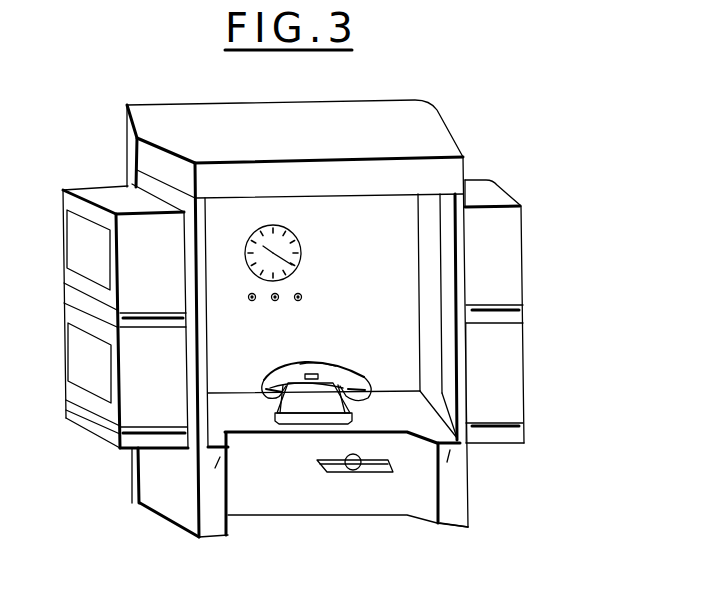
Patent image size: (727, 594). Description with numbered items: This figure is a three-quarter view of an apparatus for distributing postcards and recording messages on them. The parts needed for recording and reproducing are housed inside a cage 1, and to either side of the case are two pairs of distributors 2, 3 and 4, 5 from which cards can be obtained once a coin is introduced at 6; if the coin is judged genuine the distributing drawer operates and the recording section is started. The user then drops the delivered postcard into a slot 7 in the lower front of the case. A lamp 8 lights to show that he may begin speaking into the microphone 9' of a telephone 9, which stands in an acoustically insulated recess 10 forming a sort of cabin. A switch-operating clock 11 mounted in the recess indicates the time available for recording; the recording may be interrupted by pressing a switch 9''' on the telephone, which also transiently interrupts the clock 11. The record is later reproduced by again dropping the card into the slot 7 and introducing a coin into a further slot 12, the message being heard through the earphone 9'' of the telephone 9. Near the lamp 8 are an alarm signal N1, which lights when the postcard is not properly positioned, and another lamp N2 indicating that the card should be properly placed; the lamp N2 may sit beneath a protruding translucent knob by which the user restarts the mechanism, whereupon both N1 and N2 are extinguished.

The cage 1 is at (393, 118).
The distributor 2 is at (138, 243).
The distributor 3 is at (133, 417).
The distributor 4 is at (503, 255).
The distributor 5 is at (508, 369).
The coin introduction point 6 is at (218, 520).
The slot 7 is at (368, 472).
The lamp 8 is at (250, 302).
The telephone 9 is at (314, 382).
The microphone 9' is at (366, 377).
The earphone 9'' is at (258, 374).
The switch 9''' is at (318, 356).
The acoustically insulated recess 10 is at (383, 220).
The switch-operating clock 11 is at (285, 240).
The further slot 12 is at (445, 508).
The alarm signal N1 is at (275, 302).
The lamp N2 is at (302, 297).